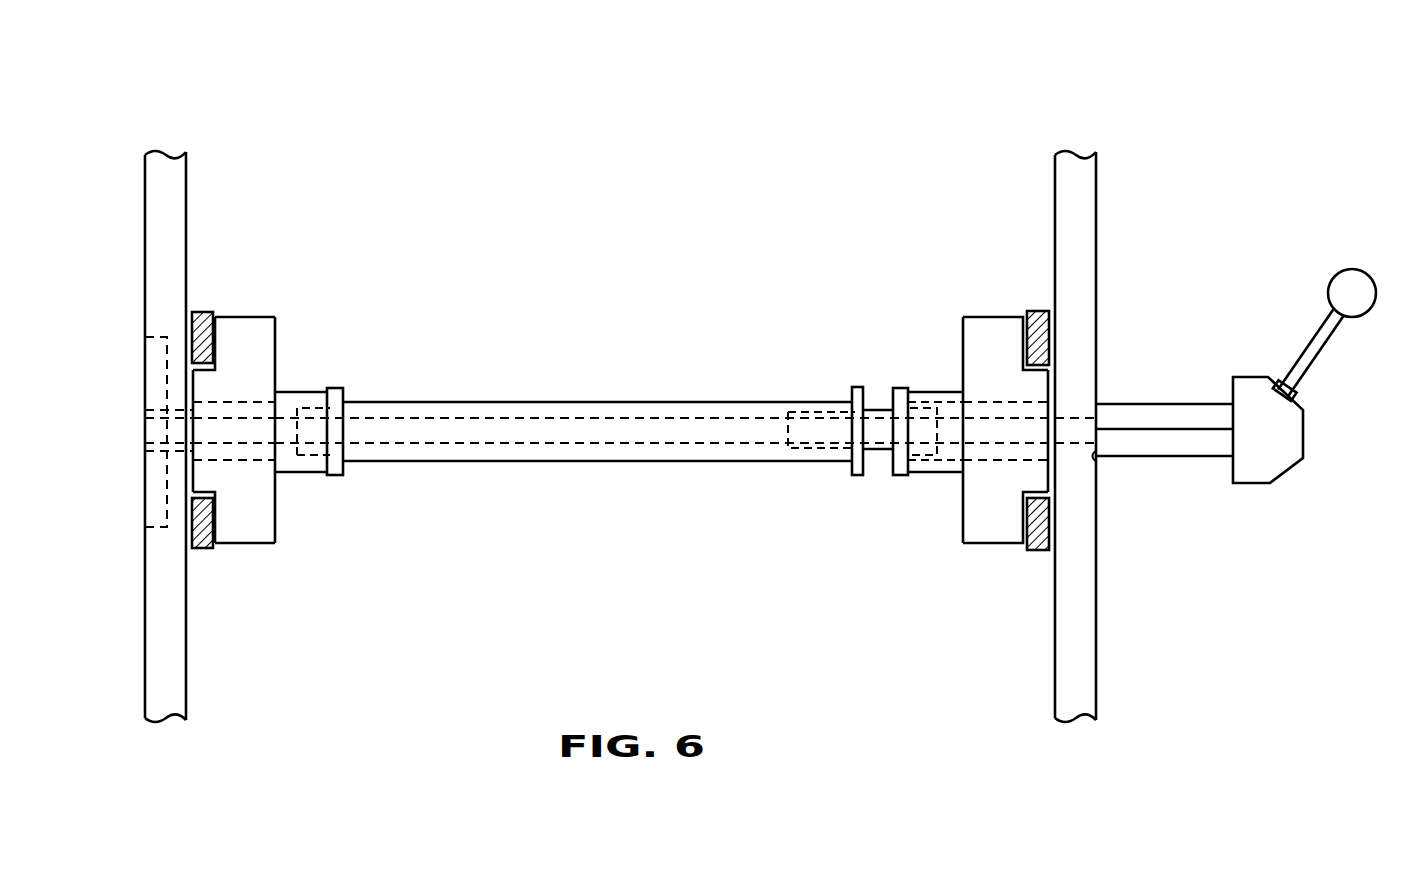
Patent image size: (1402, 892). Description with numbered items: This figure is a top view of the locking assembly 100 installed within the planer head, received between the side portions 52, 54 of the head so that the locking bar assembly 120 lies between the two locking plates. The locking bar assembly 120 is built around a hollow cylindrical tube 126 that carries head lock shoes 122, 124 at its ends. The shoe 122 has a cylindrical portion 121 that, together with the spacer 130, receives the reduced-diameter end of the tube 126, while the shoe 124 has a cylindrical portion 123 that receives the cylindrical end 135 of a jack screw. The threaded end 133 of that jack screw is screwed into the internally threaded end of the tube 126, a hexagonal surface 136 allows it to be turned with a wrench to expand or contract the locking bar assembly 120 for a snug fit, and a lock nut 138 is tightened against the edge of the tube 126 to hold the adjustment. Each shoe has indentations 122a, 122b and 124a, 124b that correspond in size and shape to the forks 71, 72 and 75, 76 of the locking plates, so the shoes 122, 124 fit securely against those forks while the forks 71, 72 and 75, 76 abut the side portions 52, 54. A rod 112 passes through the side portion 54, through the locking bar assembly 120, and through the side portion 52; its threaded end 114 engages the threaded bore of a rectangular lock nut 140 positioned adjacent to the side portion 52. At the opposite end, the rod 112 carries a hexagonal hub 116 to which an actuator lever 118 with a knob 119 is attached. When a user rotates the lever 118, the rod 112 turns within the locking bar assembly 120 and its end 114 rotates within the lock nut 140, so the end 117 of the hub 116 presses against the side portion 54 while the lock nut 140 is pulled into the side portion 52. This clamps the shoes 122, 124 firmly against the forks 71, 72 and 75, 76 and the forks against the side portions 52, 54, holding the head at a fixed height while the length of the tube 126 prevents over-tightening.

The locking assembly 100 is at (800, 125).
The side portion 52 is at (150, 638).
The side portion 54 is at (1090, 662).
The lock nut 140 is at (160, 337).
The threaded end 114 is at (150, 432).
The fork 71 is at (199, 312).
The fork 72 is at (202, 550).
The fork 75 is at (1033, 311).
The fork 76 is at (1037, 552).
The head lock shoe 122 is at (274, 317).
The indentation 122a is at (220, 340).
The indentation 122b is at (217, 503).
The head lock shoe 124 is at (963, 337).
The indentation 124a is at (1020, 352).
The indentation 124b is at (1020, 507).
The cylindrical portion 121 is at (303, 392).
The cylindrical portion 123 is at (930, 472).
The spacer 130 is at (335, 475).
The rod 112 is at (477, 402).
The hollow cylindrical tube 126 is at (548, 402).
The locking bar assembly 120 is at (562, 466).
The threaded end of jack screw 133 is at (803, 450).
The cylindrical end of jack screw 135 is at (940, 432).
The lock nut 138 is at (855, 387).
The hexagonal surface 136 is at (894, 388).
The hub 116 is at (1175, 410).
The end of hub 117 is at (1097, 460).
The actuator lever 118 is at (1288, 440).
The knob 119 is at (1350, 280).